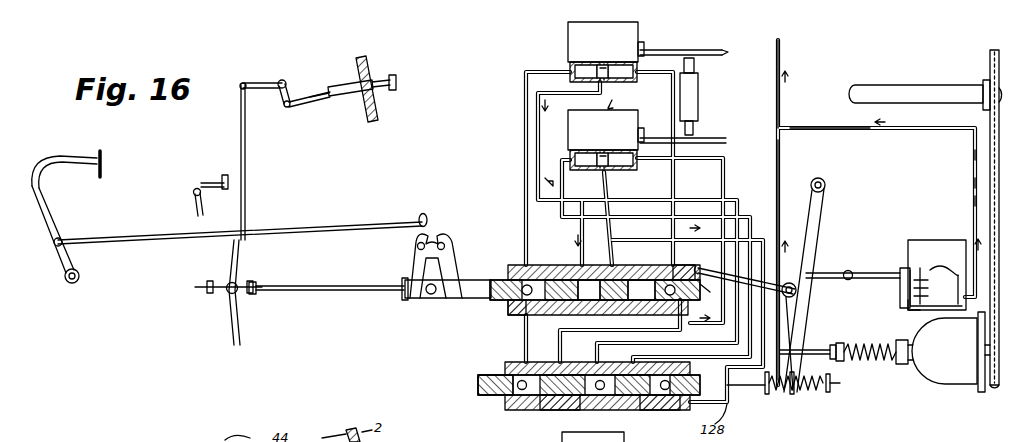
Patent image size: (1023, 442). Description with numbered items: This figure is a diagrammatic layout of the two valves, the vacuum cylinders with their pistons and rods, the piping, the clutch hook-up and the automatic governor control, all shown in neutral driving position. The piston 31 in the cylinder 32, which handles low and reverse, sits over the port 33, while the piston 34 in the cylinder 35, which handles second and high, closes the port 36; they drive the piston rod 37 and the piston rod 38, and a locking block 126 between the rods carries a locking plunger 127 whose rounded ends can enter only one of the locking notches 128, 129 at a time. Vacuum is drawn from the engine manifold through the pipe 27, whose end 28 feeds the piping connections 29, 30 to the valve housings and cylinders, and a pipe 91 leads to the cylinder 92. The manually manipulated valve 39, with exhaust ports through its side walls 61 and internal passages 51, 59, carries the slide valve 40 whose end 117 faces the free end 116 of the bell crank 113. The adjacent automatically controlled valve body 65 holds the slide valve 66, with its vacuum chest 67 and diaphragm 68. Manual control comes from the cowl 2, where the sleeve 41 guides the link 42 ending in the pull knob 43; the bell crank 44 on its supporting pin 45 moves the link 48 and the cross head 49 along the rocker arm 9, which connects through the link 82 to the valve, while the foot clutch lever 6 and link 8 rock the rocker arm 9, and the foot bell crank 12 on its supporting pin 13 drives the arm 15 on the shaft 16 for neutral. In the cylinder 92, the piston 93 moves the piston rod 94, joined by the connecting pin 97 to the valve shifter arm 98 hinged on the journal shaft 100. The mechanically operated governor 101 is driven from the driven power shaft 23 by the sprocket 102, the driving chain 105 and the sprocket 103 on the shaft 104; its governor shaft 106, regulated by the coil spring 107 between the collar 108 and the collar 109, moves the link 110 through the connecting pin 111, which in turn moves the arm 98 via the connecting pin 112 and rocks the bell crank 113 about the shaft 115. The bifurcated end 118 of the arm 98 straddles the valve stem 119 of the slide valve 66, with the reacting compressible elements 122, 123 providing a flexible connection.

The cowl 2 is at (381, 108).
The foot clutch lever 6 is at (54, 212).
The link 8 is at (140, 245).
The rocker arm 9 is at (226, 310).
The bell crank 12 is at (211, 189).
The supporting pin 13 is at (196, 189).
The arm 15 is at (433, 228).
The shaft 16 is at (413, 249).
The driven power shaft 23 is at (938, 82).
The pipe 27 is at (782, 68).
The end of the pipe 28 is at (782, 127).
The piping connection 29 is at (782, 165).
The piping connection 30 is at (973, 152).
The piston 31 is at (646, 61).
The cylinder 32 is at (640, 39).
The port 33 is at (616, 82).
The piston 34 is at (618, 152).
The cylinder 35 is at (568, 125).
The port 36 is at (600, 172).
The piston rod 37 is at (706, 50).
The piston rod 38 is at (720, 139).
The valve 39 is at (510, 263).
The slide valve 40 is at (475, 300).
The sleeve 41 is at (343, 100).
The link 42 is at (307, 110).
The pull knob 43 is at (398, 82).
The bell crank 44 is at (291, 99).
The supporting pin 45 is at (286, 82).
The link 48 is at (240, 116).
The cross head 49 is at (224, 280).
The valve chamber 51 is at (596, 318).
The valve chamber 59 is at (630, 318).
The side walls of the valve body 61 is at (676, 263).
The automatically controlled valve body 65 is at (524, 412).
The slide valve 66 is at (493, 390).
The vacuum chest 67 is at (566, 412).
The diaphragm 68 is at (650, 412).
The link 82 is at (326, 286).
The pipe 91 is at (974, 199).
The cylinder 92 is at (930, 246).
The piston 93 is at (910, 309).
The piston rod 94 is at (876, 272).
The connecting pin 97 is at (849, 270).
The valve shifter arm 98 is at (820, 224).
The journal shaft 100 is at (830, 186).
The mechanically operated governor 101 is at (926, 366).
The sprocket 102 is at (998, 50).
The sprocket 103 is at (993, 392).
The shaft of the mechanical governor 104 is at (975, 375).
The driving chain 105 is at (988, 176).
The governor shaft 106 is at (882, 362).
The coil spring 107 is at (900, 340).
The collar 108 is at (916, 386).
The collar 109 is at (866, 337).
The link 110 is at (830, 350).
The connecting pin 111 is at (834, 359).
The connecting pin 112 is at (800, 393).
The bell crank 113 is at (792, 306).
The shaft 115 is at (790, 283).
The free end of the bell crank 116 is at (699, 267).
The end of the valve 117 is at (703, 293).
The bifurcated end 118 is at (815, 393).
The valve stem 119 is at (766, 388).
The reacting compressible element 122 is at (835, 390).
The reacting compressible element 123 is at (782, 396).
The locking block 126 is at (700, 96).
The locking plunger 127 is at (697, 68).
The locking notch 128 is at (726, 52).
The locking notch 129 is at (700, 131).